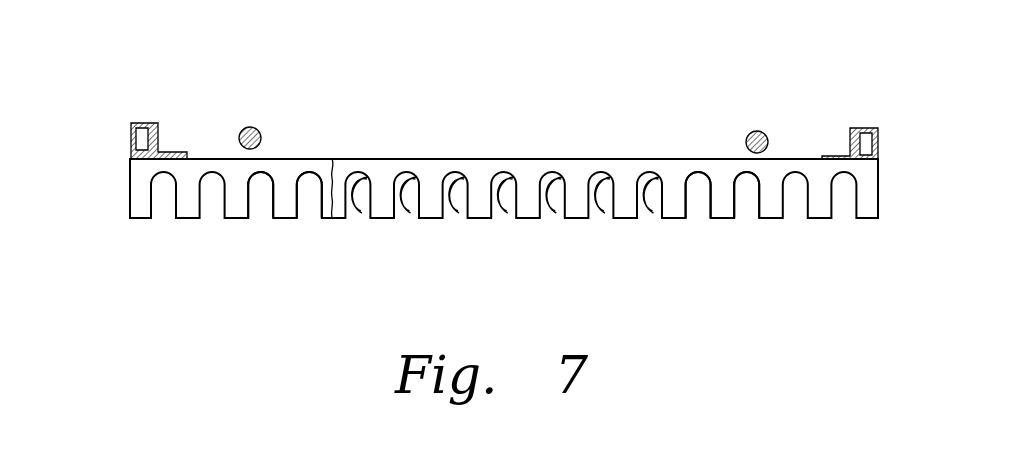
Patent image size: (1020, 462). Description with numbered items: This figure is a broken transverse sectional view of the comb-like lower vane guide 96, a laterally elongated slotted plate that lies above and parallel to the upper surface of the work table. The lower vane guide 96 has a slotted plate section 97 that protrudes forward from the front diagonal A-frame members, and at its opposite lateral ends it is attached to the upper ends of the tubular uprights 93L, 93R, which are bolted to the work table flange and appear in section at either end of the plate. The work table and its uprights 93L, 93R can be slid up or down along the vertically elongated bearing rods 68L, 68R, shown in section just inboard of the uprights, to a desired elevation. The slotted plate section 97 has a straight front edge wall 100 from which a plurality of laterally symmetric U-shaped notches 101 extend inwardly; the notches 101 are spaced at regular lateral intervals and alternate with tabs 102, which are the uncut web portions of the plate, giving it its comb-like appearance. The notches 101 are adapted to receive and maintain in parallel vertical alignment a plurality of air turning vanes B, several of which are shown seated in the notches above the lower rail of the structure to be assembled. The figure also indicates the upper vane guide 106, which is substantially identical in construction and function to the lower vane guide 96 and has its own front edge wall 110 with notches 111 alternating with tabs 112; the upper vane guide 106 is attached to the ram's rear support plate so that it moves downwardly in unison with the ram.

The lower vane guide 96 is at (120, 203).
The slotted plate section 97 is at (205, 158).
The front edge wall 100 is at (138, 219).
The U-shaped notches 101 is at (308, 203).
The tabs 102 is at (232, 219).
The upper vane guide 106 is at (501, 128).
The front edge wall 110 is at (868, 220).
The notches 111 is at (747, 202).
The tabs 112 is at (819, 220).
The tubular upright 93L is at (132, 137).
The tubular upright 93R is at (878, 137).
The bearing rod 68L is at (243, 127).
The bearing rod 68R is at (757, 131).
The air turning vanes B is at (404, 215).